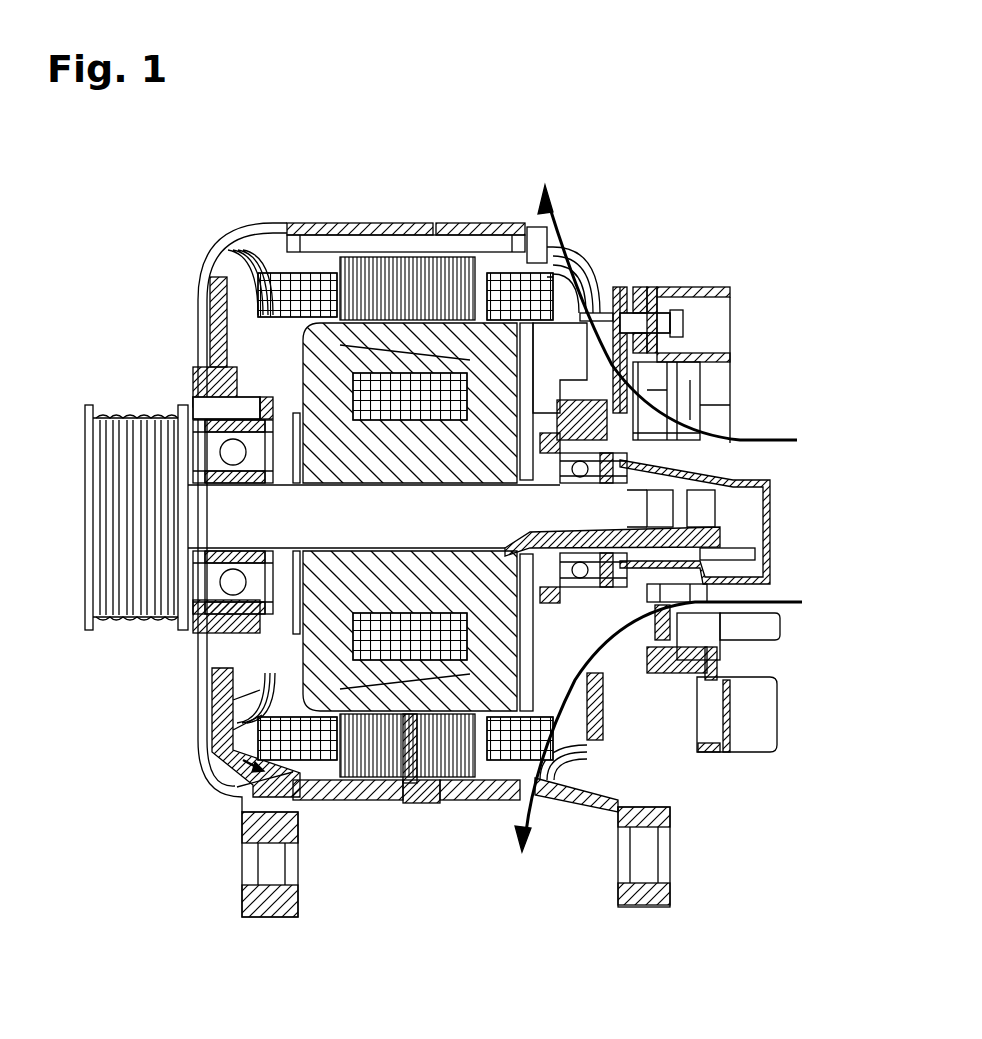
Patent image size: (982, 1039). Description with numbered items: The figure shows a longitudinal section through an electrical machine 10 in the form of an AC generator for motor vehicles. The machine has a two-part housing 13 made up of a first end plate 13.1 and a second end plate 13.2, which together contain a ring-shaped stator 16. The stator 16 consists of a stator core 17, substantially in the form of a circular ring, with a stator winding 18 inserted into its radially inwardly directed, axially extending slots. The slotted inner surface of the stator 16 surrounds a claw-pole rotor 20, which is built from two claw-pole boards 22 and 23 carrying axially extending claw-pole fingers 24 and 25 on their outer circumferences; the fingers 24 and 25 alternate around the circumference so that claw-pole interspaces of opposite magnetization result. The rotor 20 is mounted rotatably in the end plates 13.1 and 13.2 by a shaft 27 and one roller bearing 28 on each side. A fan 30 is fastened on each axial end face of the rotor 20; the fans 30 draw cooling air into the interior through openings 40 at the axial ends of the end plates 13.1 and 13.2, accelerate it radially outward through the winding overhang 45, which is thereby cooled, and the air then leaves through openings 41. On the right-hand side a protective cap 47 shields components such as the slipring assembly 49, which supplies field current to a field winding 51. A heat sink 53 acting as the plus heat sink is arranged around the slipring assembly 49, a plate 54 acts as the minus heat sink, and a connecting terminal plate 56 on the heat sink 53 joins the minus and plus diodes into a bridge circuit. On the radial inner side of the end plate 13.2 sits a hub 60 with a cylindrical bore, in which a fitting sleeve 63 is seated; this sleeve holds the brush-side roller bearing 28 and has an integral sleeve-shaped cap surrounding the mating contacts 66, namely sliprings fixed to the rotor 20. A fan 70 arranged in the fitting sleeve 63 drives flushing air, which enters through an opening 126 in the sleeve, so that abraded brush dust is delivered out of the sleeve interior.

The electrical machine 10 is at (662, 207).
The housing 13 is at (443, 212).
The first end plate 13.1 is at (222, 727).
The second end plate 13.2 is at (612, 713).
The stator 16 is at (240, 787).
The stator core 17 is at (380, 257).
The stator winding 18 is at (510, 800).
The rotor 20 is at (127, 390).
The claw-pole board 22 is at (237, 680).
The claw-pole board 23 is at (500, 395).
The claw-pole finger 24 is at (373, 780).
The claw-pole finger 25 is at (477, 683).
The shaft 27 is at (282, 532).
The roller bearing 28 is at (212, 652).
The fan 30 is at (262, 360).
The opening 40 is at (735, 348).
The opening 41 is at (575, 262).
The winding overhang 45 is at (300, 285).
The protective cap 47 is at (707, 287).
The slipring assembly 49 is at (740, 565).
The field winding 51 is at (415, 783).
The heat sink 53 is at (677, 440).
The plate 54 is at (626, 287).
The connecting terminal plate 56 is at (670, 276).
The hub 60 is at (727, 720).
The fitting sleeve 63 is at (745, 540).
The mating contact 66 is at (720, 467).
The fan 70 is at (720, 592).
The opening 126 is at (775, 490).